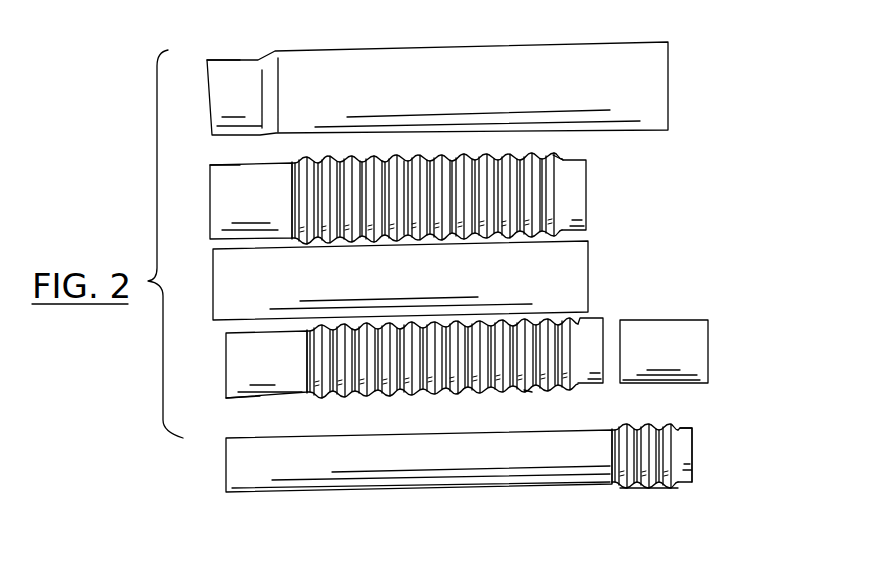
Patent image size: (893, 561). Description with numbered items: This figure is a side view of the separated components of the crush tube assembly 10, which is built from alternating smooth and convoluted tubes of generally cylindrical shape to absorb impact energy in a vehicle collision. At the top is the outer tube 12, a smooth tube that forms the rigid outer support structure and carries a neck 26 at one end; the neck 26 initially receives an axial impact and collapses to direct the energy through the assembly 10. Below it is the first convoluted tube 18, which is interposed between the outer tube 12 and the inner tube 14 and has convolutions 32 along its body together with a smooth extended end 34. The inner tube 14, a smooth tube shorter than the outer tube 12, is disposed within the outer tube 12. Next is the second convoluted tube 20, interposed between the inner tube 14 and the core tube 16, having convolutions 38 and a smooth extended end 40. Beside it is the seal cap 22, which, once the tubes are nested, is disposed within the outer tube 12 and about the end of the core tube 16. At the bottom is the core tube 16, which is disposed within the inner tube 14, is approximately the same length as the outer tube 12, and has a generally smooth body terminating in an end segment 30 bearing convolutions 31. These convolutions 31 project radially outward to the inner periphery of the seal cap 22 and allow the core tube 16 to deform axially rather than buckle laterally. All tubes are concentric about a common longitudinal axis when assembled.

The crush tube assembly 10 is at (725, 119).
The outer tube 12 is at (243, 103).
The inner tube 14 is at (254, 286).
The core tube 16 is at (272, 470).
The first convoluted tube 18 is at (250, 196).
The second convoluted tube 20 is at (272, 370).
The seal cap 22 is at (674, 350).
The neck 26 is at (218, 63).
The end segment 30 is at (690, 482).
The convolutions 31 is at (677, 490).
The convolutions 32 is at (553, 157).
The smooth extended end 34 is at (238, 163).
The convolutions 38 is at (527, 381).
The smooth extended end 40 is at (281, 400).